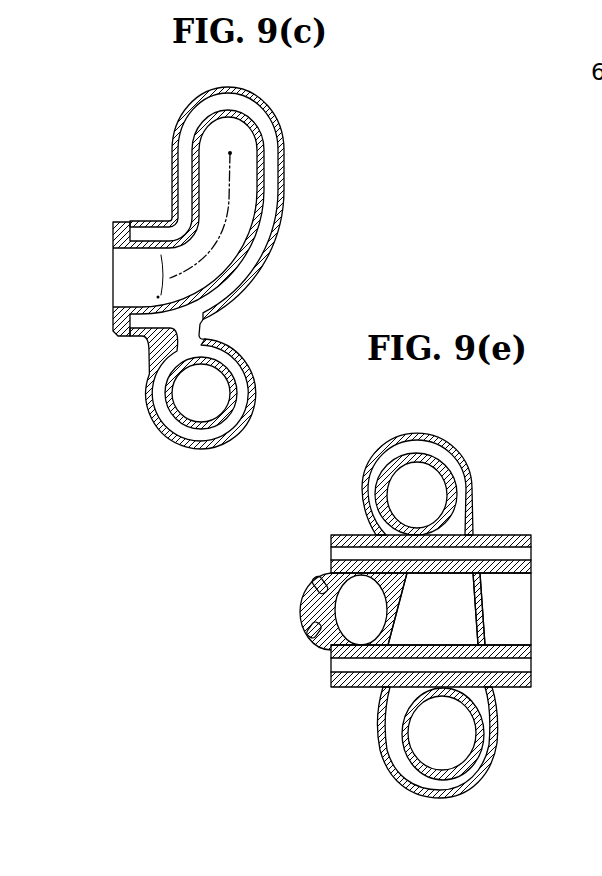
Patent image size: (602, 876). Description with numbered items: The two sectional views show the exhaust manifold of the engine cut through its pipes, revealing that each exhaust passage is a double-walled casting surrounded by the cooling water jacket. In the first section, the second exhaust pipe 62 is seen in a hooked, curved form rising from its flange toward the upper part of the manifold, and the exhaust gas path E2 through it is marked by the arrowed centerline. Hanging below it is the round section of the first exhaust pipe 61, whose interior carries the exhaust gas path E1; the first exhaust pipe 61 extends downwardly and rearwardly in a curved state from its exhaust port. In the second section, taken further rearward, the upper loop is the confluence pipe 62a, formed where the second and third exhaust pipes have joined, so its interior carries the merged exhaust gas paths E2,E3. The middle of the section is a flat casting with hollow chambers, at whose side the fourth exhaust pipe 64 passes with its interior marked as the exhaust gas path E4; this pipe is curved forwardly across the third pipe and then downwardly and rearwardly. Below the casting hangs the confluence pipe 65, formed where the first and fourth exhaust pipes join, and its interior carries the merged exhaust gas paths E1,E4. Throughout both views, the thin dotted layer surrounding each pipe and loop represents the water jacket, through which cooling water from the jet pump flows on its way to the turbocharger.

The first exhaust pipe 61 is at (218, 385).
The second exhaust pipe 62 is at (247, 193).
The confluence pipe 62a is at (428, 475).
The fourth exhaust pipe 64 is at (302, 615).
The confluence pipe 65 is at (450, 753).
The exhaust gas path E1 is at (207, 408).
The exhaust gas path E2 is at (170, 278).
The exhaust gas paths E2,E3 is at (557, 490).
The exhaust gas path E4 is at (324, 592).
The exhaust gas paths E1,E4 is at (443, 732).